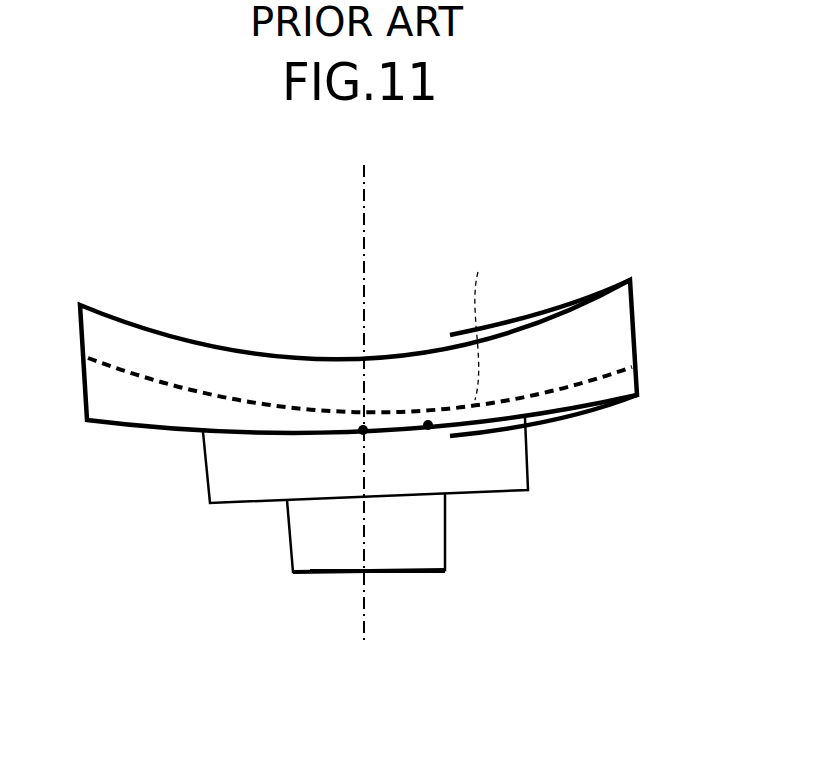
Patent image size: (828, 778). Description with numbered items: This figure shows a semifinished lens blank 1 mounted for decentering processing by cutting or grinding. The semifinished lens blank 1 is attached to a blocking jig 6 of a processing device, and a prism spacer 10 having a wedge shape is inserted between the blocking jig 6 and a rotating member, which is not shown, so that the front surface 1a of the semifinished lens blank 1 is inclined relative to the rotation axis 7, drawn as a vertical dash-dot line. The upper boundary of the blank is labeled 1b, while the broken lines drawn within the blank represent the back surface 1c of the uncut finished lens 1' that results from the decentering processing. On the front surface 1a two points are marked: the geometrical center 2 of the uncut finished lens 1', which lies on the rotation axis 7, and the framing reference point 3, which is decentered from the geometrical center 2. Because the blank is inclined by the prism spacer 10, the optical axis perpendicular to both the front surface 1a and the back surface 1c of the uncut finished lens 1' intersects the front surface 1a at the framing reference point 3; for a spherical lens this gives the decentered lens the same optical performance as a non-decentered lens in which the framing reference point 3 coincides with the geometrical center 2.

The rotation axis 7 is at (365, 197).
The semifinished lens blank 1 is at (358, 337).
The uncut finished lens 1' is at (402, 385).
The upper surface of workpiece 1b is at (557, 318).
The back surface 1c is at (483, 326).
The front surface 1a is at (573, 410).
The geometrical center 2 is at (363, 430).
The framing reference point 3 is at (428, 425).
The blocking jig 6 is at (428, 530).
The prism spacer 10 is at (430, 574).